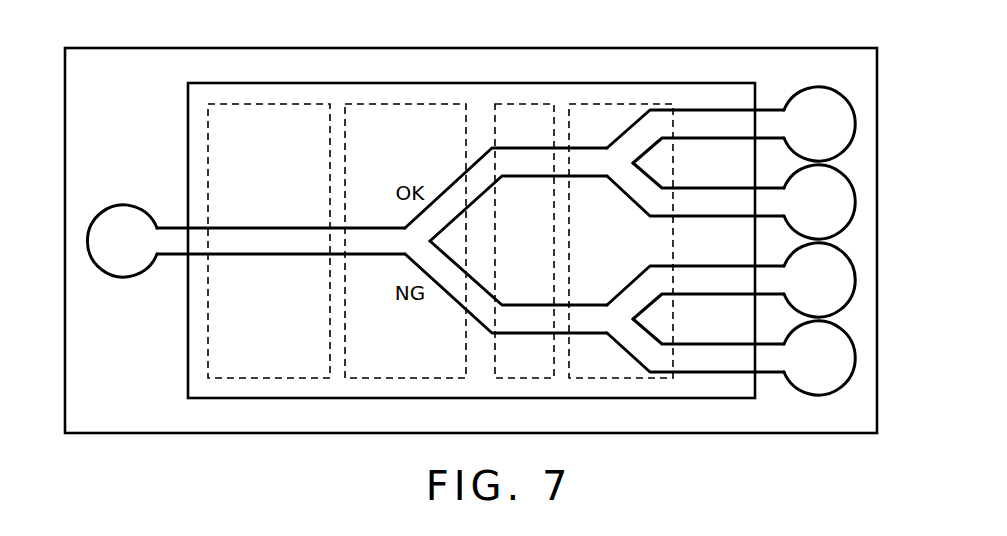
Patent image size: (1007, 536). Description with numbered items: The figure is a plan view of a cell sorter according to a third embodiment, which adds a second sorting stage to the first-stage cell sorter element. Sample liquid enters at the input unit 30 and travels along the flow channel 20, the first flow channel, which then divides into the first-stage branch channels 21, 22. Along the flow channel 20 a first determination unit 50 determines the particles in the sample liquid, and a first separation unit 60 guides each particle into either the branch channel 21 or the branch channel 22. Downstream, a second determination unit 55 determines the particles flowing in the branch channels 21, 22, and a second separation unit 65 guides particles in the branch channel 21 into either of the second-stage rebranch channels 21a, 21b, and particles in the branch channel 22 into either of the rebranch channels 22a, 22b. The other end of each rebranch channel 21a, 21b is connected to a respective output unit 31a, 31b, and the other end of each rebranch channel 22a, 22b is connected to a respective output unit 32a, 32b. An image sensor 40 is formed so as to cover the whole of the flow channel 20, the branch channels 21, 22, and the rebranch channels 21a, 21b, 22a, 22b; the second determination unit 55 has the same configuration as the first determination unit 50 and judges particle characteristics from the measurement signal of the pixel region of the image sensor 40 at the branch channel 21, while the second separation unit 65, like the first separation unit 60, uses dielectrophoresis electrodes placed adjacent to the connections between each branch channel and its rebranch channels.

The flow channel 20 is at (198, 226).
The first-stage branch channel 21 is at (455, 180).
The first-stage branch channel 22 is at (455, 304).
The second-stage rebranch channel 21a is at (743, 110).
The second-stage rebranch channel 21b is at (683, 188).
The second-stage rebranch channel 22a is at (683, 266).
The second-stage rebranch channel 22b is at (683, 344).
The input unit 30 is at (127, 277).
The output unit 31a is at (853, 107).
The output unit 31b is at (853, 185).
The output unit 32a is at (853, 263).
The output unit 32b is at (853, 341).
The image sensor 40 is at (720, 83).
The first determination unit 50 is at (293, 103).
The second determination unit 55 is at (517, 103).
The first separation unit 60 is at (417, 103).
The second separation unit 65 is at (592, 103).